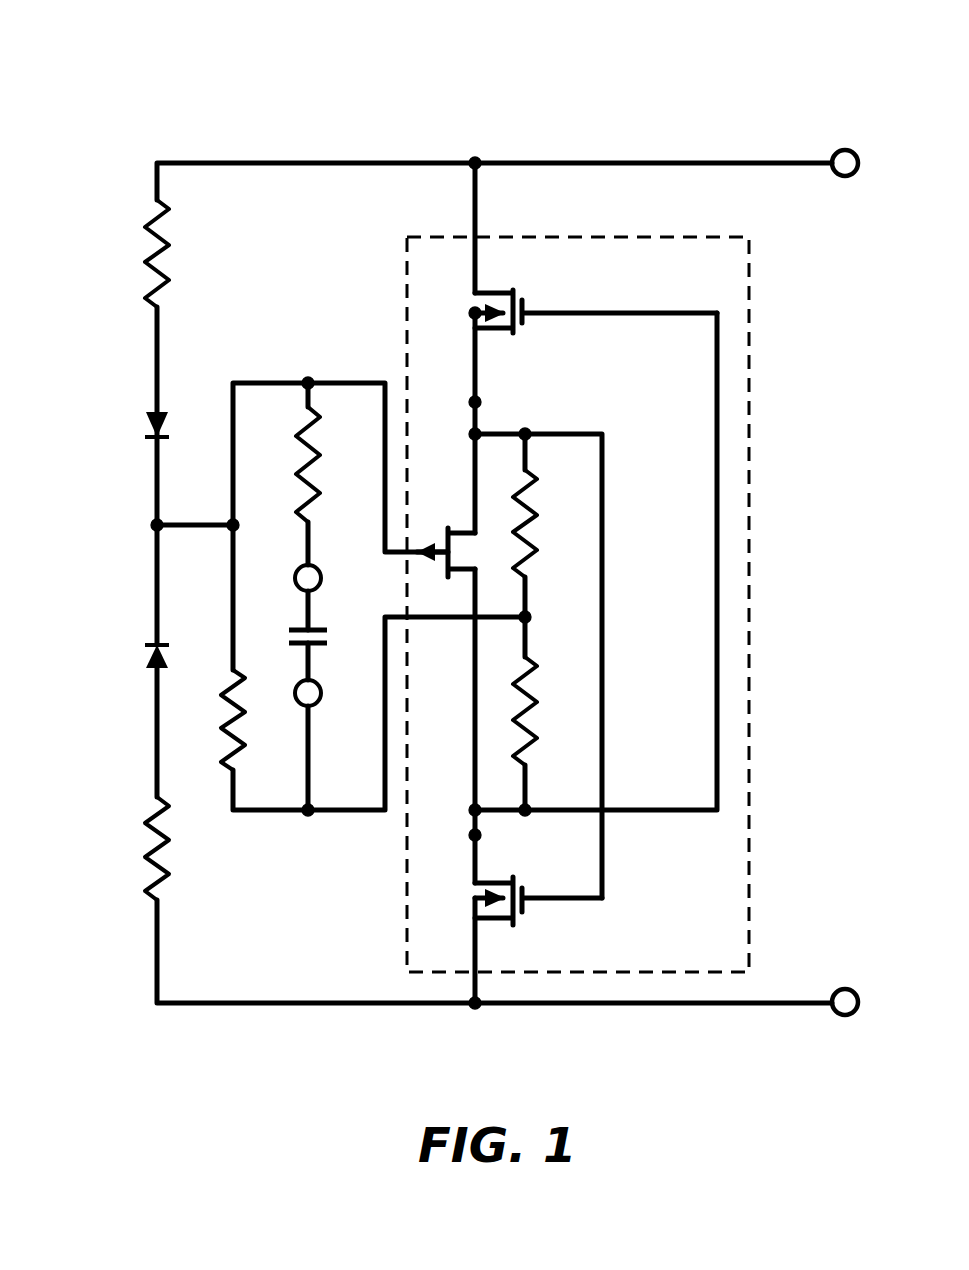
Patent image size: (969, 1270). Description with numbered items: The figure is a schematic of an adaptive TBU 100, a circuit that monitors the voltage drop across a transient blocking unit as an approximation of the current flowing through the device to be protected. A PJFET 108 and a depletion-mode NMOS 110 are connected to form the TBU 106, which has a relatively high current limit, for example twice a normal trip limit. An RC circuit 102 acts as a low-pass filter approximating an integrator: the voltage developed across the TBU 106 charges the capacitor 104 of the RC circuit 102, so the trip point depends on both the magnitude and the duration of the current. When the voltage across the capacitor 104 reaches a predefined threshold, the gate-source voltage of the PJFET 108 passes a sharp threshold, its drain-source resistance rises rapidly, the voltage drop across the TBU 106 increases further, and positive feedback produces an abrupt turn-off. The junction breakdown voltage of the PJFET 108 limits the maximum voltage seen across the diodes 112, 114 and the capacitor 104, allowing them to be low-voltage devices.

The adaptive TBU 100 is at (150, 91).
The RC circuit 102 is at (373, 540).
The capacitor 104 is at (318, 627).
The TBU 106 is at (552, 586).
The PJFET 108 is at (448, 528).
The depletion-mode NMOS 110 is at (515, 335).
The diode 112 is at (152, 435).
The diode 114 is at (152, 645).